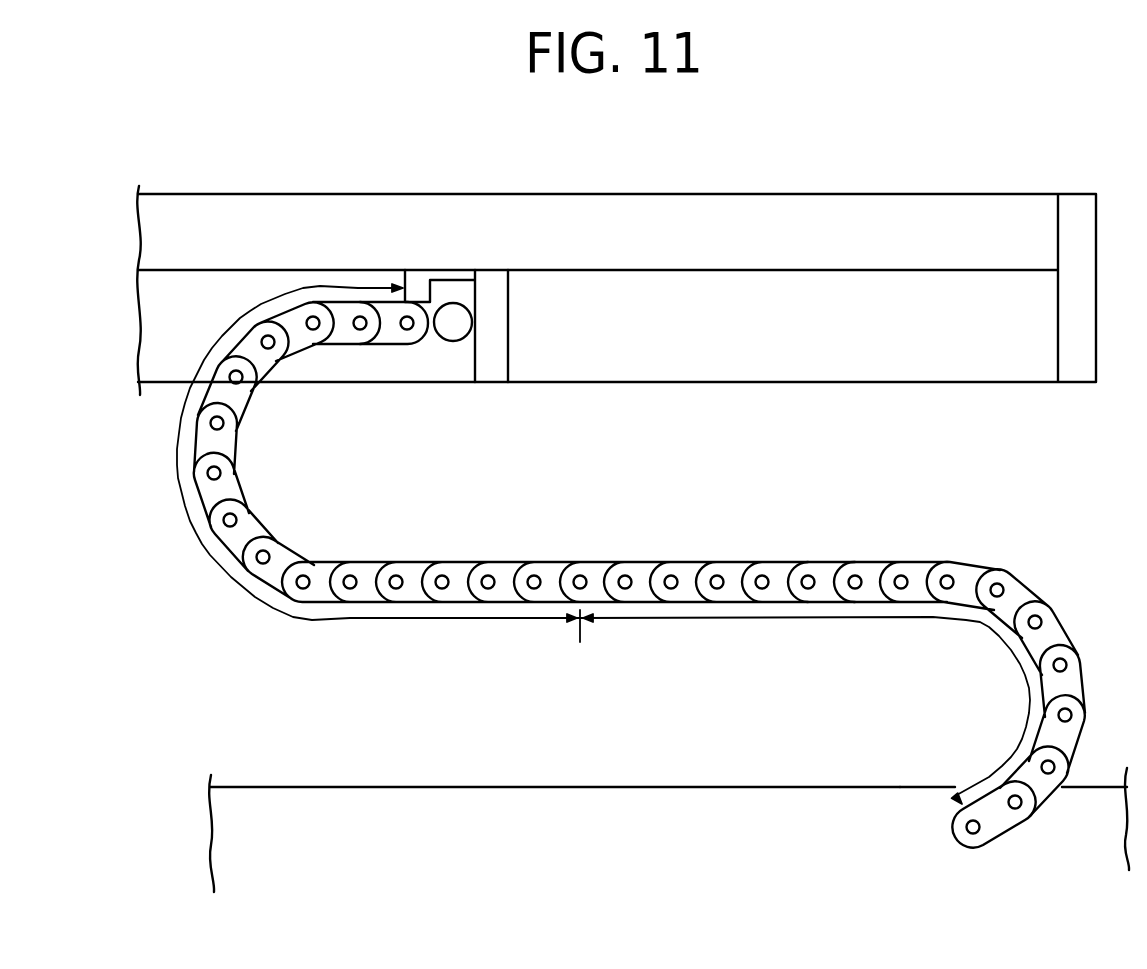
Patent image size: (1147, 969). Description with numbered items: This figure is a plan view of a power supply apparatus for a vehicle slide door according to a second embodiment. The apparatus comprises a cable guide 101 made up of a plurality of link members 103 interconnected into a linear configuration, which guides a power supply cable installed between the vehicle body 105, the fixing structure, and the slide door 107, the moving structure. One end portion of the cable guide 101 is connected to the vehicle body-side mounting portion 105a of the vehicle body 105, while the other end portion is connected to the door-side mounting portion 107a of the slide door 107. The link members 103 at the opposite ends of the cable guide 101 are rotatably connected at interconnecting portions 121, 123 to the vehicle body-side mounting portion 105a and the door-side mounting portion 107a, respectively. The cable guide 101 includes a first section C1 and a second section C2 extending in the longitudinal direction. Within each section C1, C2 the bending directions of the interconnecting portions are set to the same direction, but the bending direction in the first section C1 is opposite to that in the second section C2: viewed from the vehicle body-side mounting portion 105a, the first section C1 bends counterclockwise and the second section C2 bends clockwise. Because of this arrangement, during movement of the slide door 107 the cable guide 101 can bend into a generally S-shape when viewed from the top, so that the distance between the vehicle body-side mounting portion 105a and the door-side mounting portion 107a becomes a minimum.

The cable guide 101 is at (639, 601).
The link member 103 is at (837, 607).
The vehicle body 105 is at (669, 791).
The vehicle body-side mounting portion 105a is at (953, 837).
The slide door 107 is at (616, 333).
The door-side mounting portion 107a is at (432, 348).
The interconnecting portion 121 is at (978, 848).
The interconnecting portion 123 is at (405, 333).
The first section C1 is at (765, 619).
The second section C2 is at (440, 619).